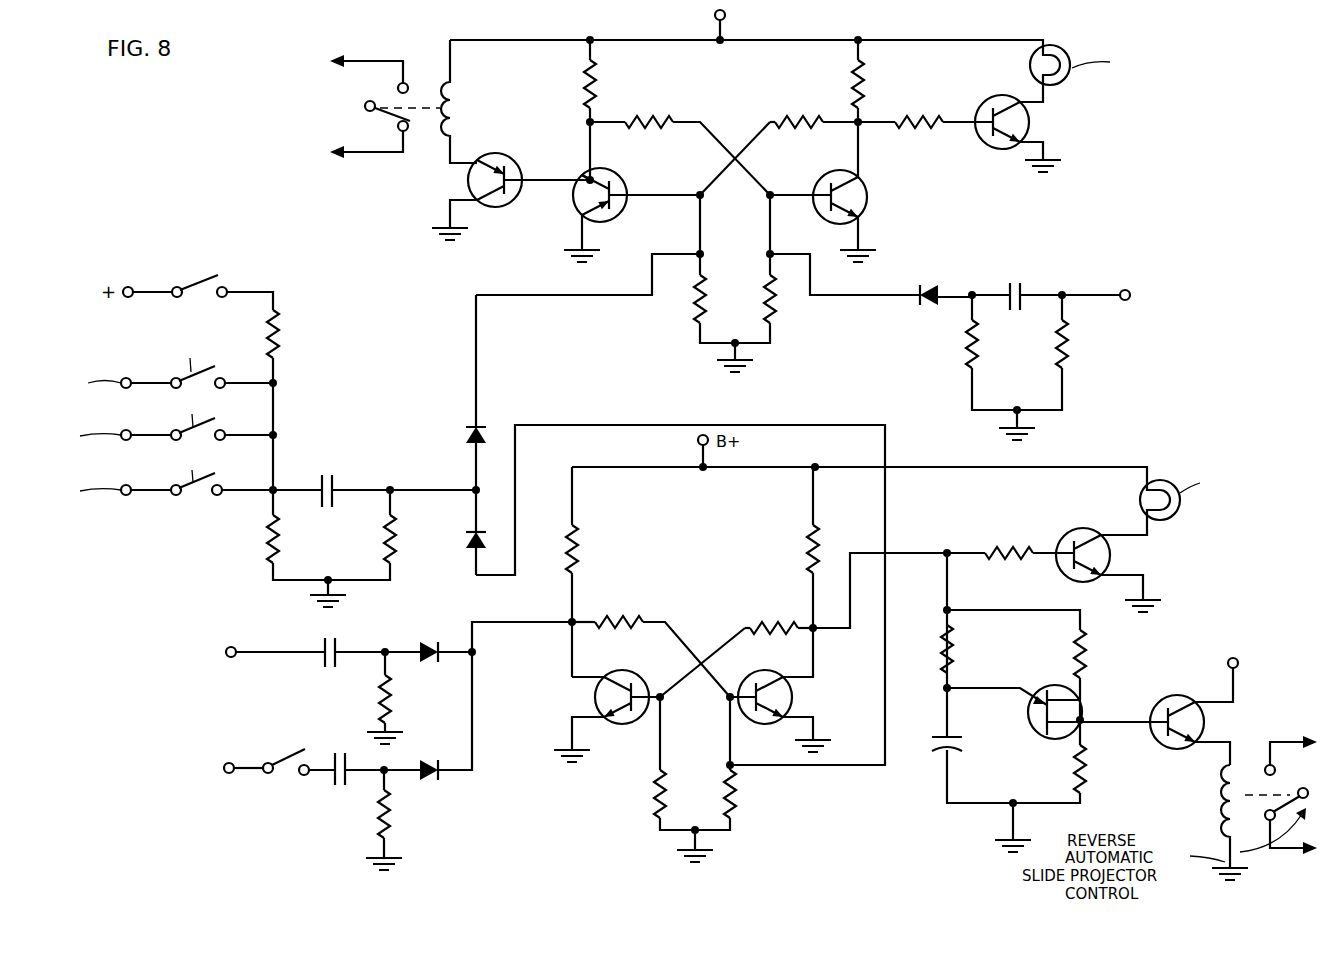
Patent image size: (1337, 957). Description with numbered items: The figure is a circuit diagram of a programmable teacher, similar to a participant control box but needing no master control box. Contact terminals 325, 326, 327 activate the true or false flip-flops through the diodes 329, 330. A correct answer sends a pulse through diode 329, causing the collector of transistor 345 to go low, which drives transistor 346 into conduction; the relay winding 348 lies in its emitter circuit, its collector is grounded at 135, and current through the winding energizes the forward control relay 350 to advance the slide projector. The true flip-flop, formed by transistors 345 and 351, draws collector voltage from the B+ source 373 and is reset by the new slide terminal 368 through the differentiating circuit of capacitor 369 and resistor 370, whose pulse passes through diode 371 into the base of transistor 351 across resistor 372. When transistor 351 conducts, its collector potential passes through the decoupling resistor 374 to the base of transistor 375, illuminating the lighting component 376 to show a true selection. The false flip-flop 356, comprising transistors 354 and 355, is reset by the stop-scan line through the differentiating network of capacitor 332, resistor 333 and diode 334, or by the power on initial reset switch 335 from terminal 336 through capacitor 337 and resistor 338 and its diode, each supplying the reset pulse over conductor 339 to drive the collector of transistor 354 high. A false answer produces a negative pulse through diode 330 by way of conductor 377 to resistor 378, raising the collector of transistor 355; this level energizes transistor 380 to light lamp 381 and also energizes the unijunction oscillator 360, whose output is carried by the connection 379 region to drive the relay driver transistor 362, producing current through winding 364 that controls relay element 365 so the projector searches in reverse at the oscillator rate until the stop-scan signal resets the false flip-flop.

The ground 135 is at (568, 252).
The contact terminal 325 is at (125, 378).
The contact terminal 326 is at (126, 430).
The contact terminal 327 is at (126, 485).
The diode 329 is at (470, 430).
The diode 330 is at (466, 544).
The capacitor 332 is at (330, 642).
The resistor 333 is at (392, 684).
The diode 334 is at (426, 642).
The power on initial reset switch 335 is at (290, 758).
The terminal 336 is at (229, 763).
The capacitor 337 is at (339, 752).
The resistor and diode 338 is at (433, 780).
The conductor 339 is at (478, 634).
The transistor 345 is at (618, 188).
The transistor 346 is at (490, 155).
The relay winding 348 is at (460, 102).
The forward control relay 350 is at (365, 108).
The transistor 351 is at (853, 196).
The transistor 354 is at (597, 700).
The transistor 355 is at (790, 702).
The flip-flop 356 is at (701, 656).
The unijunction oscillator 360 is at (1038, 736).
The relay driver transistor 362 is at (1156, 746).
The winding 364 is at (1222, 797).
The relay element 365 is at (1278, 790).
The new slide terminal 368 is at (1124, 302).
The capacitor 369 is at (1017, 283).
The resistor 370 is at (966, 348).
The diode 371 is at (930, 288).
The resistor 372 is at (777, 297).
The B+ source 373 is at (714, 12).
The decoupling resistor 374 is at (918, 120).
The transistor 375 is at (1000, 146).
The lighting component 376 is at (1066, 50).
The conductor 377 is at (790, 425).
The resistor 378 is at (737, 797).
The conductor 379 is at (908, 553).
The transistor 380 is at (1083, 528).
The lamp 381 is at (1159, 484).